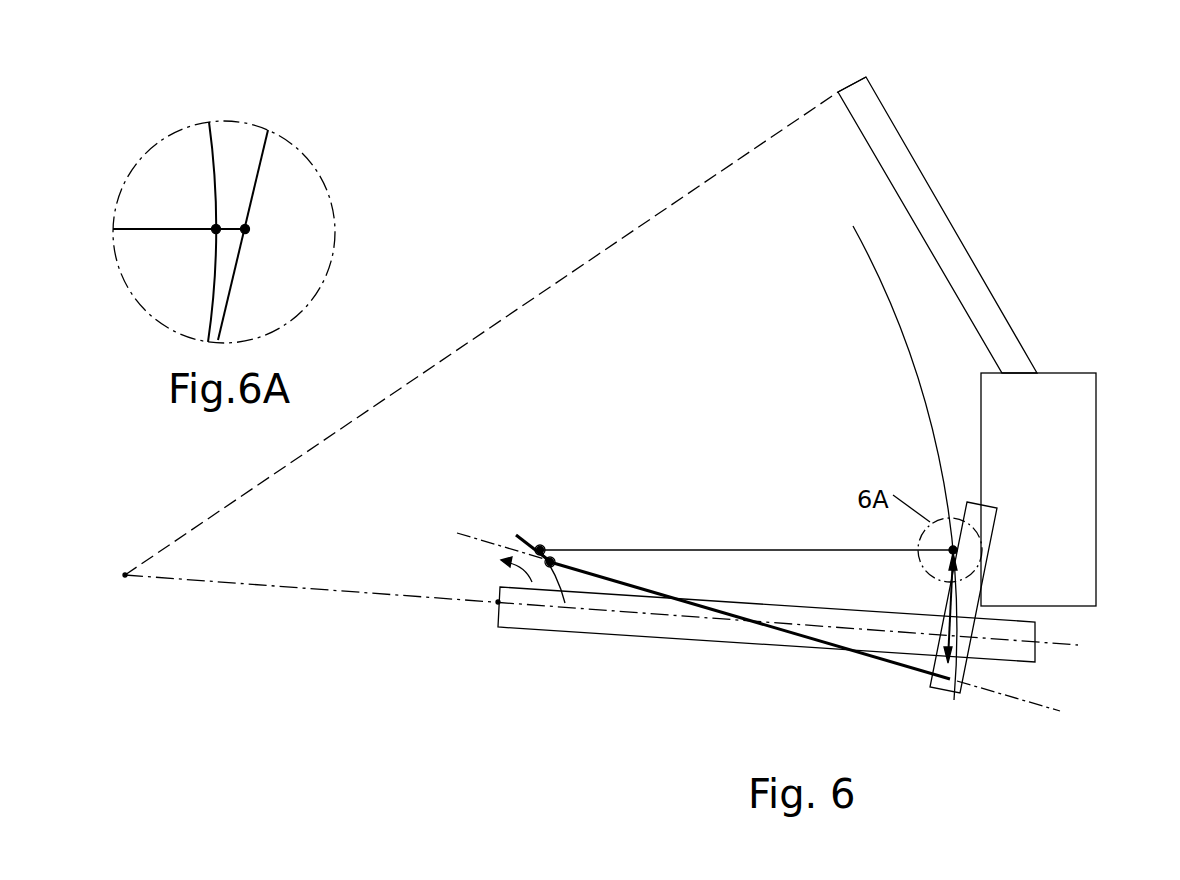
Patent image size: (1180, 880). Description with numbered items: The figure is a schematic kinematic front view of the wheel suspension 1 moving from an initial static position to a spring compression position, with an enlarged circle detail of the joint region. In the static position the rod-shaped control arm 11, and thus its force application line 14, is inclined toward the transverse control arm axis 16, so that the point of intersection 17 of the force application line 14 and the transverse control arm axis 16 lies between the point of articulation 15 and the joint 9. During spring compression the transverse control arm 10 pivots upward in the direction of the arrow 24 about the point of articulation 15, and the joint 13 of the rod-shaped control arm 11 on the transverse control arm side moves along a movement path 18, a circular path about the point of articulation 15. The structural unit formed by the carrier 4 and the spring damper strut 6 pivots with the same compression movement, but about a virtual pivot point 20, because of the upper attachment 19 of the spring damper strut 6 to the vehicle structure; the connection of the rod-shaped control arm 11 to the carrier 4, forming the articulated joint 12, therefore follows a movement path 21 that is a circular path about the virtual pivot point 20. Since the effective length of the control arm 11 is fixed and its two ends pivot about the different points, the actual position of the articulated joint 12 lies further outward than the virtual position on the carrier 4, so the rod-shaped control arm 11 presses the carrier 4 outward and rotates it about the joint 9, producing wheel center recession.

In FIG. 6, the wheel suspension 1 is at (495, 238).
In FIG. 6, the carrier 4 is at (972, 588).
In FIG. 6A, the carrier 4 is at (273, 265).
In FIG. 6, the spring damper strut 6 is at (885, 137).
In FIG. 6, the joint 9 is at (1035, 643).
In FIG. 6, the transverse control arm 10 is at (642, 636).
In FIG. 6, the rod-shaped control arm 11 is at (730, 550).
In FIG. 6A, the rod-shaped control arm 11 is at (145, 232).
In FIG. 6, the articulated joint 12 is at (933, 680).
In FIG. 6A, the articulated joint 12 is at (250, 228).
In FIG. 6, the joint 13 is at (551, 561).
In FIG. 6, the force application line 14 is at (473, 537).
In FIG. 6, the point of articulation 15 is at (498, 604).
In FIG. 6, the transverse control arm axis 16 is at (318, 590).
In FIG. 6, the point of intersection 17 is at (753, 624).
In FIG. 6, the movement path 18 is at (530, 540).
In FIG. 6, the upper attachment 19 is at (853, 85).
In FIG. 6, the virtual pivot point 20 is at (125, 573).
In FIG. 6, the movement path 21 is at (860, 237).
In FIG. 6A, the movement path 21 is at (213, 170).
In FIG. 6, the arrow 24 is at (483, 568).